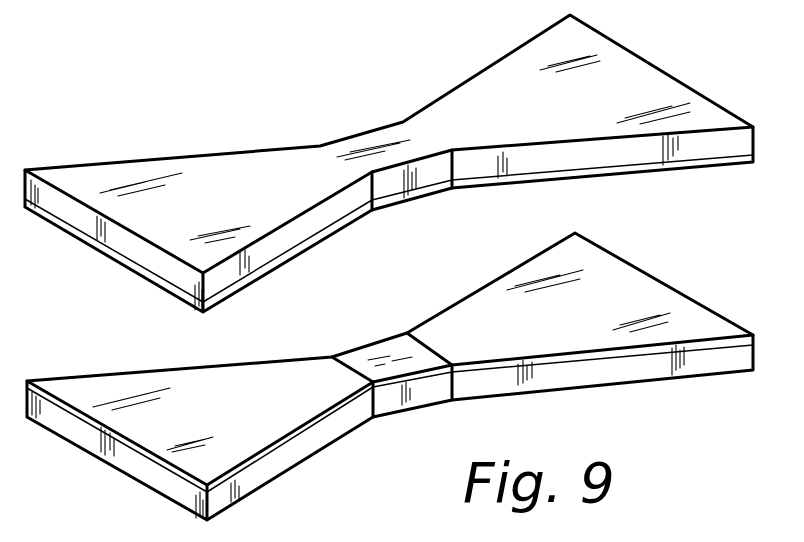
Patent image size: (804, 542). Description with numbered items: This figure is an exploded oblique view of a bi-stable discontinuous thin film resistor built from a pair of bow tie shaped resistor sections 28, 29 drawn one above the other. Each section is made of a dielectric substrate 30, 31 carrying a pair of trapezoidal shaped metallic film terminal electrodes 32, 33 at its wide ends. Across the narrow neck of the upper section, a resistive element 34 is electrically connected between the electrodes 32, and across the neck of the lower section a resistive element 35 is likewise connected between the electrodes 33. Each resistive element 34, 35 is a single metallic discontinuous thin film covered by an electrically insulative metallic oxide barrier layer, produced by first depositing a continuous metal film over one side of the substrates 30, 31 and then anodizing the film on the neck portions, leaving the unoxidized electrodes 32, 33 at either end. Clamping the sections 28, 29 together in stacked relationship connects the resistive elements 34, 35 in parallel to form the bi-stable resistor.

The bow tie shaped resistor section 28 is at (645, 153).
The bow tie shaped resistor section 29 is at (667, 307).
The dielectric substrate 30 is at (125, 245).
The dielectric substrate 31 is at (660, 368).
The trapezoidal shaped metallic film terminal electrodes 32 is at (303, 251).
The trapezoidal shaped metallic film terminal electrodes 33 is at (273, 450).
The resistive element 34 is at (418, 195).
The resistive element 35 is at (405, 377).